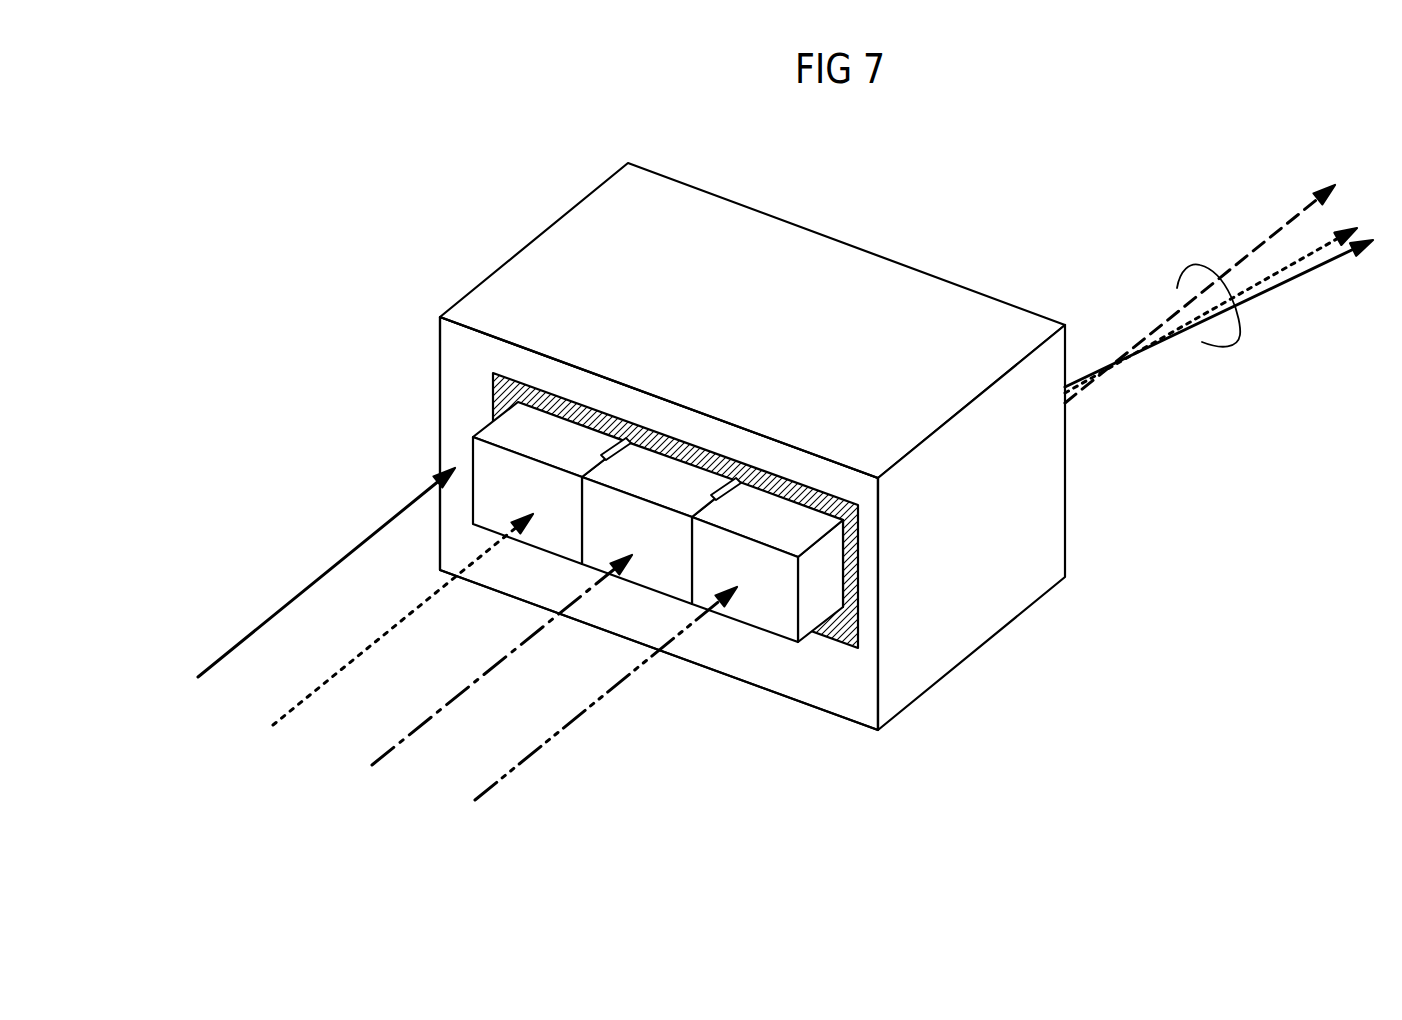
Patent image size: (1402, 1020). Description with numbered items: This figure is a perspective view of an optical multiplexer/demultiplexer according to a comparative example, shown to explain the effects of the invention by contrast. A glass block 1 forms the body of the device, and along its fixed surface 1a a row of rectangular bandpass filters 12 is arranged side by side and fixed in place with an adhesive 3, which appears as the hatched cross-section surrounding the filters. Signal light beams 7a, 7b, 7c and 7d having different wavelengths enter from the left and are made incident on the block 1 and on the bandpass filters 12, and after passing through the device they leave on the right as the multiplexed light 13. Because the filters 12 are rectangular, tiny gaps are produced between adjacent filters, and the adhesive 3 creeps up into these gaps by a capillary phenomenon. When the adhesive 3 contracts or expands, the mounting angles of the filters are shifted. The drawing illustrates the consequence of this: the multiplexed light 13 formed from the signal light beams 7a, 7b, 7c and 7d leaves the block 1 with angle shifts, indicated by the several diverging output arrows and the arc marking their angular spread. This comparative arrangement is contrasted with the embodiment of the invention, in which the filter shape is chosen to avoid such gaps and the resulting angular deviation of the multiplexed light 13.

The glass block 1 is at (542, 270).
The fixed surface 1a is at (467, 425).
The adhesive 3 is at (510, 394).
The rectangular bandpass filter 12 is at (528, 482).
The signal light beam 7a is at (307, 582).
The signal light beam 7b is at (382, 630).
The signal light beam 7c is at (482, 671).
The signal light beam 7d is at (586, 705).
The multiplexed light 13 is at (1232, 350).